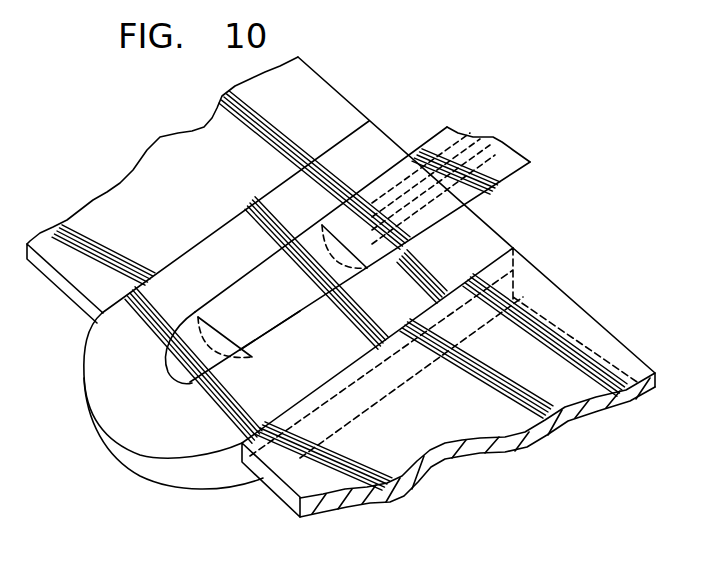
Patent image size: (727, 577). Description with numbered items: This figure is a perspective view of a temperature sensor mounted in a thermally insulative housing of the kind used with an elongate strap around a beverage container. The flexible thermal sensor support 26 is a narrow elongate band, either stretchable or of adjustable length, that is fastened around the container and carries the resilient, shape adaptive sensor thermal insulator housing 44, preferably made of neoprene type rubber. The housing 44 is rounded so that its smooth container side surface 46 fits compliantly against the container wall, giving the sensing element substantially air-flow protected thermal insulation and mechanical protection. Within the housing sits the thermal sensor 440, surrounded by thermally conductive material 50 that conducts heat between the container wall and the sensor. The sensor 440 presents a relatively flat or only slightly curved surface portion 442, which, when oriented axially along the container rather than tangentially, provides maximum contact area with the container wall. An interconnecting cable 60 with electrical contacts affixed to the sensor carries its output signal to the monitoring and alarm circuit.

The flexible thermal sensor support 26 is at (207, 198).
The sensor thermal insulator housing 44 is at (478, 234).
The smooth container side surface 46 is at (110, 393).
The thermally conductive material 50 is at (188, 376).
The interconnecting cable 60 is at (503, 180).
The thermal sensor 440 is at (267, 333).
The flat surface portion 442 is at (293, 316).